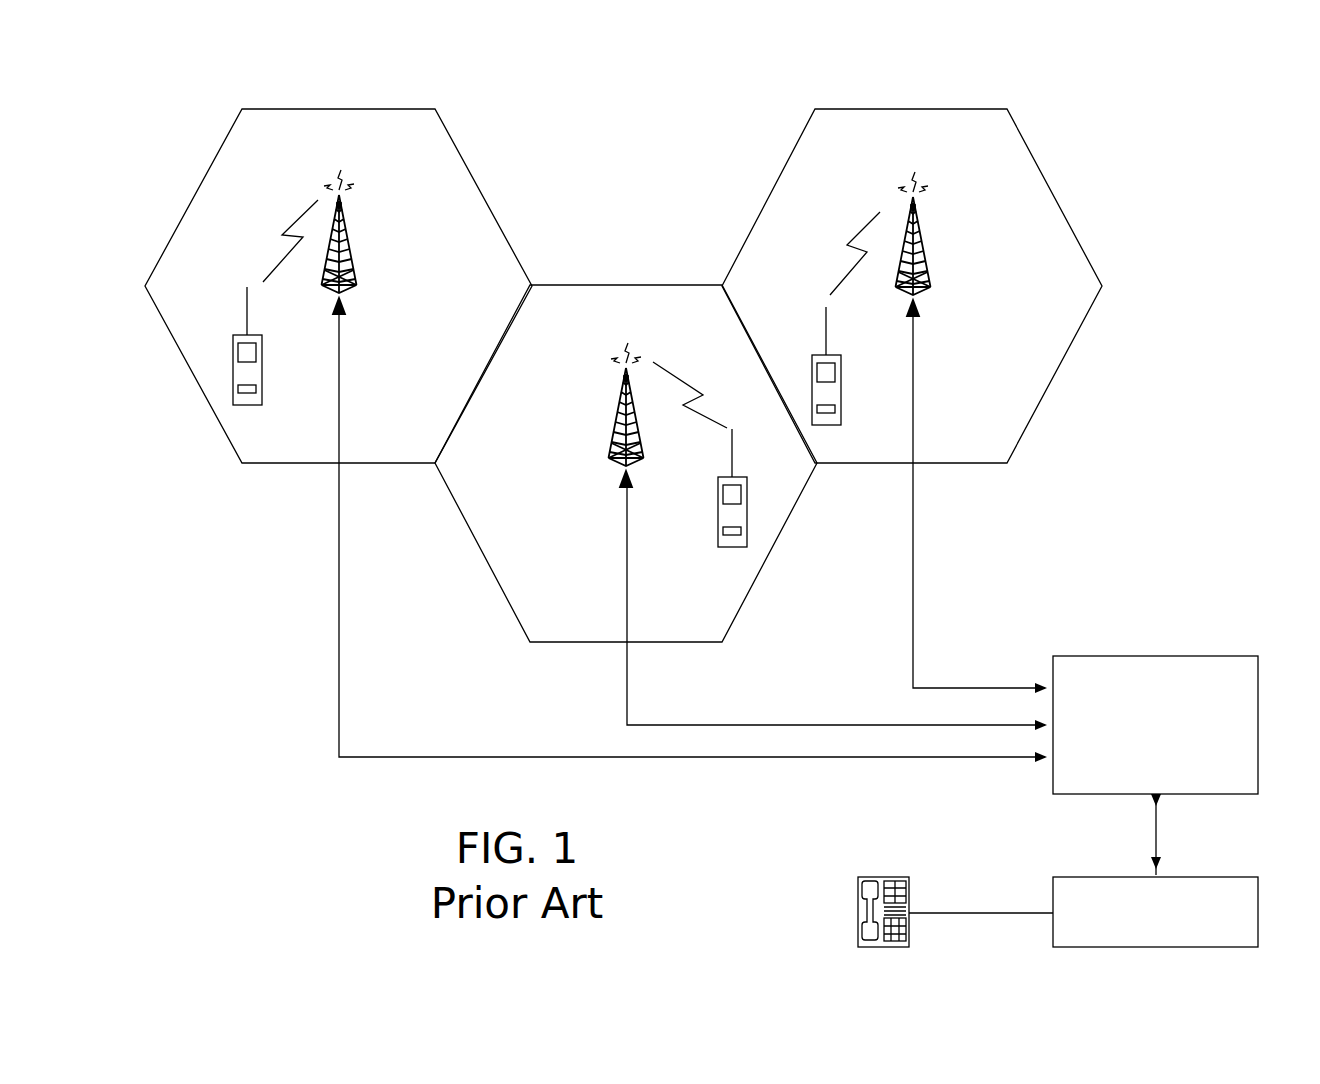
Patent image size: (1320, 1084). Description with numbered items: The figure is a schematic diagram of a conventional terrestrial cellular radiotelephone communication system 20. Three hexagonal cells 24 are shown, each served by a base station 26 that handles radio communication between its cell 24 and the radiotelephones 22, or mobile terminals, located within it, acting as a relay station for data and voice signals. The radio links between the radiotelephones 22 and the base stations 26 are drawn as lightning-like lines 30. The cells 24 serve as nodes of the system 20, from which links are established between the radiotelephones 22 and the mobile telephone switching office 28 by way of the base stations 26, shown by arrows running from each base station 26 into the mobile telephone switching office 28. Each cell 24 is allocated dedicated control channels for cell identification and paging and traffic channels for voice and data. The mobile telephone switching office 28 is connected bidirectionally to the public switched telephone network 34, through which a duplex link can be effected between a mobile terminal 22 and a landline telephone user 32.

The cellular radiotelephone communication system 20 is at (1272, 222).
The radiotelephone 22 is at (262, 378).
The cell 24 is at (230, 435).
The base station 26 is at (364, 238).
The mobile telephone switching office 28 is at (1157, 656).
The radio link 30 is at (707, 385).
The landline telephone user 32 is at (857, 912).
The public switched telephone network 34 is at (1258, 912).